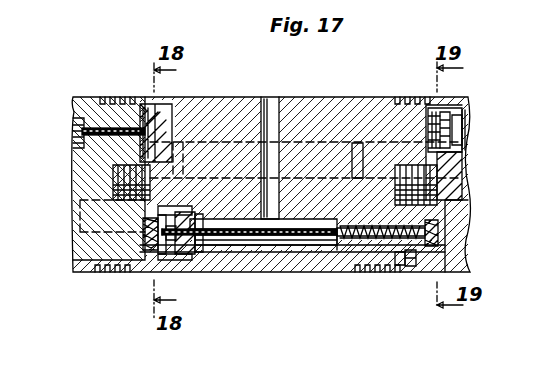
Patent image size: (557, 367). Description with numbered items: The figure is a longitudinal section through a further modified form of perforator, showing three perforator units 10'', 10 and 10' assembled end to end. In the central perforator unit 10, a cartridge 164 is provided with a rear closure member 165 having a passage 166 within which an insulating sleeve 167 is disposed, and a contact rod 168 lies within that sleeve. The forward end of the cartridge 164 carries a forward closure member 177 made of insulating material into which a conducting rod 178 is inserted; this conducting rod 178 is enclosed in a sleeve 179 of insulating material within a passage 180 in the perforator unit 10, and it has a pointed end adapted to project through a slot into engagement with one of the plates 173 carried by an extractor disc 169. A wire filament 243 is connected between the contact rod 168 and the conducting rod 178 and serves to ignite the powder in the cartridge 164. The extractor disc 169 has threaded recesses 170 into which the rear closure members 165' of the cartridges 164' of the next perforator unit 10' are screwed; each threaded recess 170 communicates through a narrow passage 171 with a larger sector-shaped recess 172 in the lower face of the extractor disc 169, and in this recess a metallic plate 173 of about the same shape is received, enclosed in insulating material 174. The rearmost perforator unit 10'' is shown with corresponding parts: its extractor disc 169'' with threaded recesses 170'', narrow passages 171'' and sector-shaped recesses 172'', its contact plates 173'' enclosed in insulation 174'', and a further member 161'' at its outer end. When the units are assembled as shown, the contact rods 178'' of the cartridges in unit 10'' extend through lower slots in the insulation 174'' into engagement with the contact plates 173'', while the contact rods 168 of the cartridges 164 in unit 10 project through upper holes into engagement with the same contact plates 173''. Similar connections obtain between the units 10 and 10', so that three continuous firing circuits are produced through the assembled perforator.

The perforator unit 10 is at (278, 167).
The next perforator unit 10' is at (477, 236).
The perforator unit 10'' is at (151, 149).
The bushing 161'' is at (50, 123).
The cartridge 164 is at (292, 290).
The cartridge 164' is at (499, 130).
The rear closure member 165 is at (249, 280).
The rear closure member 165' is at (494, 123).
The passage 166 is at (216, 252).
The insulating sleeve 167 is at (198, 254).
The contact rod 168 is at (240, 246).
The extractor disc 169 is at (481, 108).
The nut 169'' is at (187, 114).
The threaded recess 170 is at (482, 172).
The sleeve 170'' is at (148, 271).
The narrow passage 171 is at (487, 115).
The pin 171'' is at (129, 274).
The sector-shaped recess 172 is at (482, 121).
The ring 172'' is at (95, 260).
The metallic plate 173 is at (471, 225).
The contact plate 173'' is at (88, 234).
The insulating material 174 is at (456, 185).
The insulation 174'' is at (84, 213).
The forward closure member 177 is at (366, 252).
The conducting rod 178 is at (382, 272).
The contact rod 178'' is at (120, 86).
The sleeve 179 is at (411, 260).
The passage 180 is at (400, 258).
The wire filament 243 is at (320, 240).